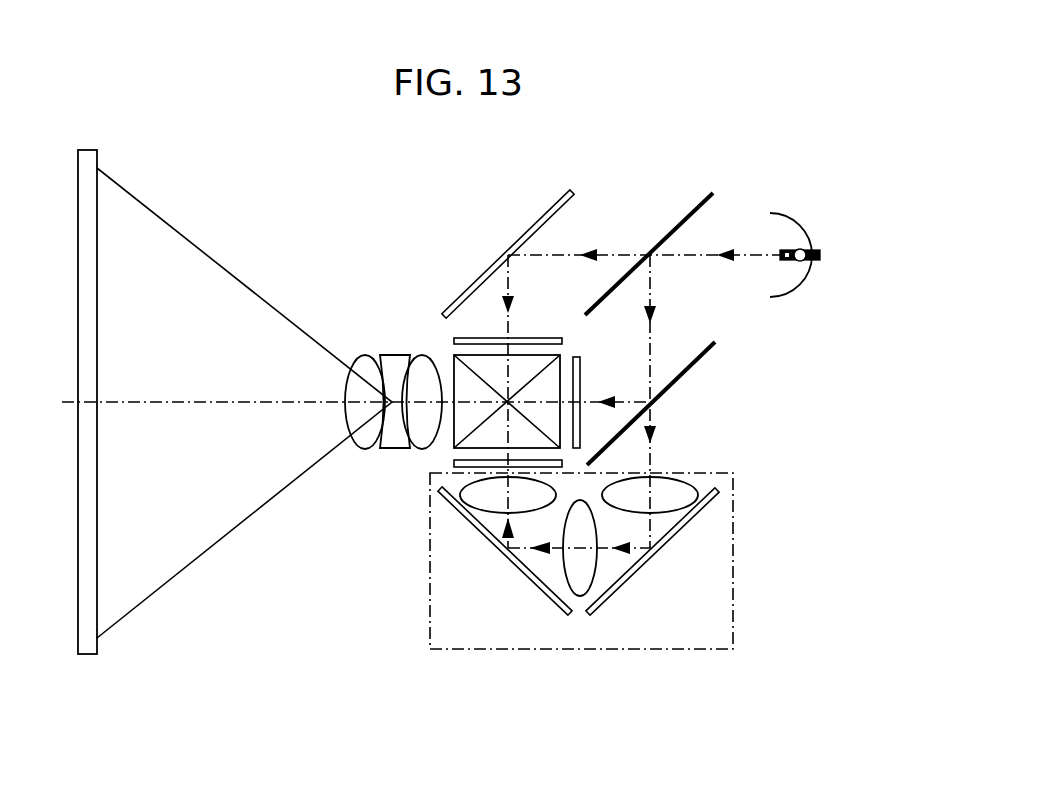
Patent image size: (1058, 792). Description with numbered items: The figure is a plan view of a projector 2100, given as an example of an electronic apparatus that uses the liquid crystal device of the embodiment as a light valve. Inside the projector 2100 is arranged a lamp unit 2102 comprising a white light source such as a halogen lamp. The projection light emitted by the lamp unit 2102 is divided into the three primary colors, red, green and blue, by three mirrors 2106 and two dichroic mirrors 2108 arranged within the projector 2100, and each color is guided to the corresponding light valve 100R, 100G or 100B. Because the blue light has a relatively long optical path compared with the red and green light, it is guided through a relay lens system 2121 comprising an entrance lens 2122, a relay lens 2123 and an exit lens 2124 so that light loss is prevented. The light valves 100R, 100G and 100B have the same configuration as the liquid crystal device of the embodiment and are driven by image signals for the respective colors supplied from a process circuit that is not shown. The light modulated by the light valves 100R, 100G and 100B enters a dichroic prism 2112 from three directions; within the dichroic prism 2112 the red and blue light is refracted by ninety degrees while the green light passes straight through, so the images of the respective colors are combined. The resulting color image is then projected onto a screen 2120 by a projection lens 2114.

The projector 2100 is at (605, 157).
The lamp unit 2102 is at (806, 240).
The mirrors 2106 is at (543, 218).
The dichroic mirrors 2108 is at (682, 220).
The dichroic prism 2112 is at (443, 307).
The projection lens 2114 is at (442, 346).
The light valve 100R is at (487, 336).
The light valve 100G is at (582, 378).
The light valve 100B is at (455, 462).
The screen 2120 is at (97, 645).
The relay lens system 2121 is at (734, 512).
The entrance lens 2122 is at (668, 507).
The relay lens 2123 is at (590, 578).
The exit lens 2124 is at (483, 500).